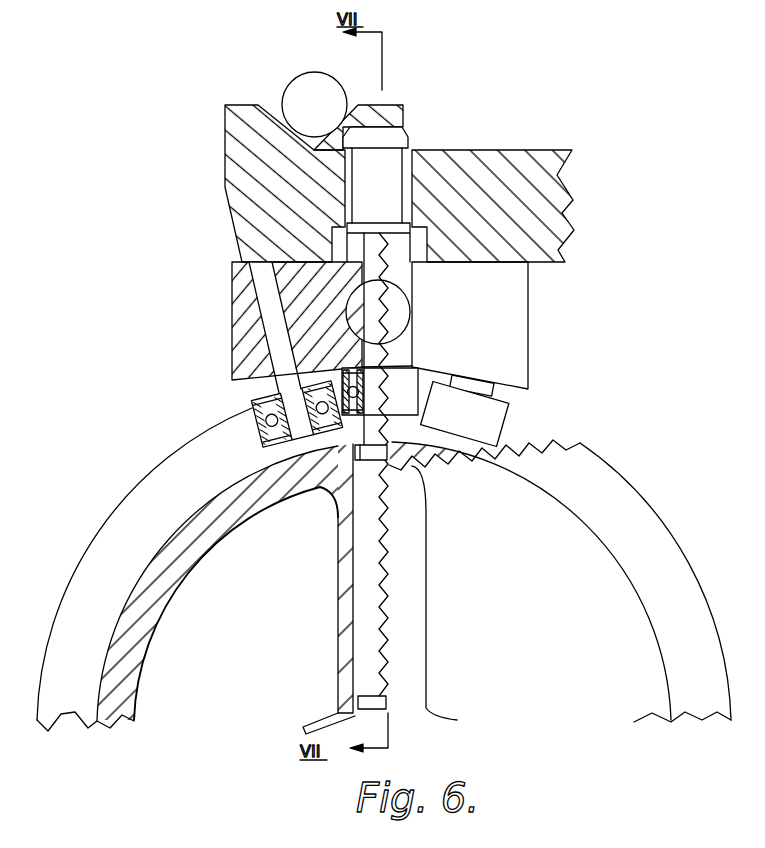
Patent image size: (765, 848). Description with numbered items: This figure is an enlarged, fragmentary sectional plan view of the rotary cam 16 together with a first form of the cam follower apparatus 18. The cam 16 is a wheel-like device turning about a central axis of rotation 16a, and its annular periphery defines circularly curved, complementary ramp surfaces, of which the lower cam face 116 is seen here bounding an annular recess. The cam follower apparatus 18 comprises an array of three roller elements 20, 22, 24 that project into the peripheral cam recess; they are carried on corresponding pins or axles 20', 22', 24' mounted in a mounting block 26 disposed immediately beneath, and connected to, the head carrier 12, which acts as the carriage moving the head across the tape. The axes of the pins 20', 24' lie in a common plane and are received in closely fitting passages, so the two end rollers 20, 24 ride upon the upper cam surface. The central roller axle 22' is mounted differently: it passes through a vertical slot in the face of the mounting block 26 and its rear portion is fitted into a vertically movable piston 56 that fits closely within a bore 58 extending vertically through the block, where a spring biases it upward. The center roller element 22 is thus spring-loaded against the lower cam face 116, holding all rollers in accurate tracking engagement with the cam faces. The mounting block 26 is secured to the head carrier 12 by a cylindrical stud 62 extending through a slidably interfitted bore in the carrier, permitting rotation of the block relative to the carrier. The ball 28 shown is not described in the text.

The head mounting block 12 is at (480, 152).
The rotary cam 16 is at (647, 483).
The central axis of rotation 16a is at (355, 713).
The cam follower apparatus 18 is at (214, 340).
The roller element 20 is at (247, 414).
The mounting pin 20' is at (229, 334).
The center roller element 22 is at (409, 448).
The central roller axle 22' is at (472, 355).
The roller element 24 is at (505, 414).
The mounting pin 24' is at (521, 385).
The mounting block 26 is at (512, 306).
The ball 28 is at (297, 90).
The piston 56 is at (357, 317).
The bore 58 is at (400, 303).
The cylindrical stud 62 is at (386, 193).
The ramp surface 116 is at (95, 555).